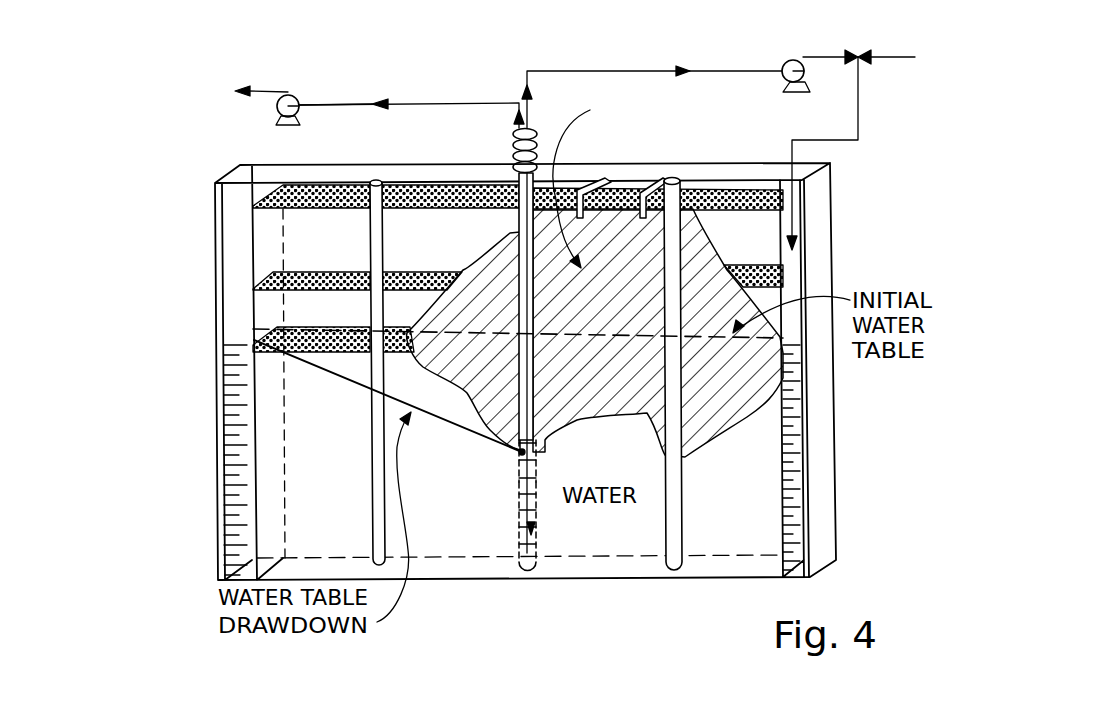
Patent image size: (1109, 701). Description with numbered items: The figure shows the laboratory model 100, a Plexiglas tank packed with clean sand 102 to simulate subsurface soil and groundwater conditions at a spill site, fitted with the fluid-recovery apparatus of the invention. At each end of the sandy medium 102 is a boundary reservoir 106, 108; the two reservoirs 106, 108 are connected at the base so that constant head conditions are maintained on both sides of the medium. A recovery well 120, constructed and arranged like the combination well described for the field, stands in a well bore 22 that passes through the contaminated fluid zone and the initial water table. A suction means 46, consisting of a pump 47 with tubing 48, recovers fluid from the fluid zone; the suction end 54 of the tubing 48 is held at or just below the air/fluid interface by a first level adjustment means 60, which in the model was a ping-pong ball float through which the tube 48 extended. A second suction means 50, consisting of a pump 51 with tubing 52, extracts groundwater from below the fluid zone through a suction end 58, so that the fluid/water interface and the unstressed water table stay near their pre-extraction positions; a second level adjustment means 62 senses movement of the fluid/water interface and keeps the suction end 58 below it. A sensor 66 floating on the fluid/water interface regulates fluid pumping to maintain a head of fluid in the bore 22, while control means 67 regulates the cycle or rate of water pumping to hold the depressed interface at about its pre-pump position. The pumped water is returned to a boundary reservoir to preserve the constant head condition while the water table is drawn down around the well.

The well bore 22 is at (515, 252).
The suction means 46 is at (368, 92).
The pump 47 is at (289, 94).
The tubing 48 is at (502, 100).
The suction means 50 is at (820, 48).
The pump 51 is at (787, 62).
The tubing 52 is at (557, 70).
The suction end 54 is at (473, 466).
The suction end 58 is at (542, 553).
The first level adjustment means 60 is at (518, 453).
The second level adjustment means 62 is at (478, 522).
The sensor 66 is at (520, 468).
The control means 67 is at (522, 527).
The laboratory model 100 is at (638, 592).
The clean sand 102 is at (298, 235).
The boundary reservoir 106 is at (230, 506).
The boundary reservoir 108 is at (797, 500).
The recovery well 120 is at (512, 222).